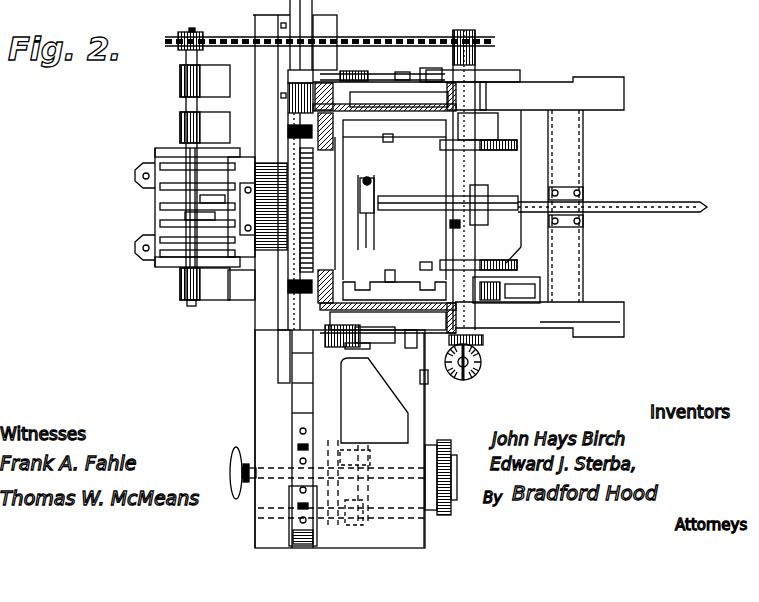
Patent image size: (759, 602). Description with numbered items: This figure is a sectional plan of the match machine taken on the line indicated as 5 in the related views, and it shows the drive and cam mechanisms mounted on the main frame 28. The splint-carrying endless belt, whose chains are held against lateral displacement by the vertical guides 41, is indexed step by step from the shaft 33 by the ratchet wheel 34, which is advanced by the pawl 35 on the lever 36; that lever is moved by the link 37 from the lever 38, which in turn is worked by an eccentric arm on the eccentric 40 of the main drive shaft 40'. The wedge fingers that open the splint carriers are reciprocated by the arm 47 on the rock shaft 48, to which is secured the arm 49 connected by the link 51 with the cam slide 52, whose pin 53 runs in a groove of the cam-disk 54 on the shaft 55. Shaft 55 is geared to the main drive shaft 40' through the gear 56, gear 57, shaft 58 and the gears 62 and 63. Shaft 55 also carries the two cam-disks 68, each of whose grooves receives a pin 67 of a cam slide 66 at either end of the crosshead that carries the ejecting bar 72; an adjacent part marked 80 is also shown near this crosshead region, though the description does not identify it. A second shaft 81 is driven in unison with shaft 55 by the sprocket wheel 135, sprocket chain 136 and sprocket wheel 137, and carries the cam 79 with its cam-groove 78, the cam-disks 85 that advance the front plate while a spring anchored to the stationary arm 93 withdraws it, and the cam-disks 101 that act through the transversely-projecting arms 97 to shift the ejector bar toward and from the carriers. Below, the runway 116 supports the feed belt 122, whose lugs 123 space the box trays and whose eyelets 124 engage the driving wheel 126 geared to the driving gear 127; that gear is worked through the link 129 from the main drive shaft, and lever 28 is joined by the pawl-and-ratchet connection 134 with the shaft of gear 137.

The horizontal section line 5 is at (322, 189).
The main frame 28 is at (572, 92).
The shaft 33 is at (370, 196).
The ratchet wheel 34 is at (343, 346).
The pawl 35 is at (347, 360).
The lever 36 is at (378, 350).
The link 37 is at (405, 336).
The lever 38 is at (373, 244).
The eccentric 40 is at (448, 196).
The main drive shaft 40' is at (612, 187).
The guides 41 is at (288, 132).
The arm 47 is at (285, 130).
The rock shaft 48 is at (230, 302).
The arm 49 is at (322, 72).
The link 51 is at (375, 73).
The cam slide 52 is at (410, 82).
The pin 53 is at (440, 72).
The cam-disk 54 is at (486, 66).
The shaft 55 is at (483, 103).
The gear 56 is at (484, 333).
The gear 57 is at (485, 356).
The shaft 58 is at (467, 379).
The gear 62 is at (452, 224).
The gear 63 is at (482, 196).
The cam slides 66 is at (378, 180).
The pin 67 is at (425, 270).
The cam-disks 68 is at (508, 146).
The ejecting bar 72 is at (243, 345).
The cam-groove 78 is at (188, 211).
The cam 79 is at (178, 205).
The pin 80 is at (378, 198).
The shaft 81 is at (184, 108).
The cam-disks 85 is at (150, 165).
The stationary arm 93 is at (140, 177).
The transversely-projecting arms 97 is at (246, 155).
The cam-disks 101 is at (157, 148).
The plate or runway 116 is at (262, 402).
The feed belt 122 is at (295, 427).
The lugs 123 is at (307, 447).
The eyelets 124 is at (288, 439).
The driving wheel 126 is at (290, 527).
The driving gear 127 is at (341, 486).
The link 129 is at (426, 400).
The pawl-and-ratchet connection 134 is at (448, 463).
The sprocket wheel 135 is at (178, 34).
The sprocket chain 136 is at (386, 36).
The sprocket wheel 137 is at (478, 38).